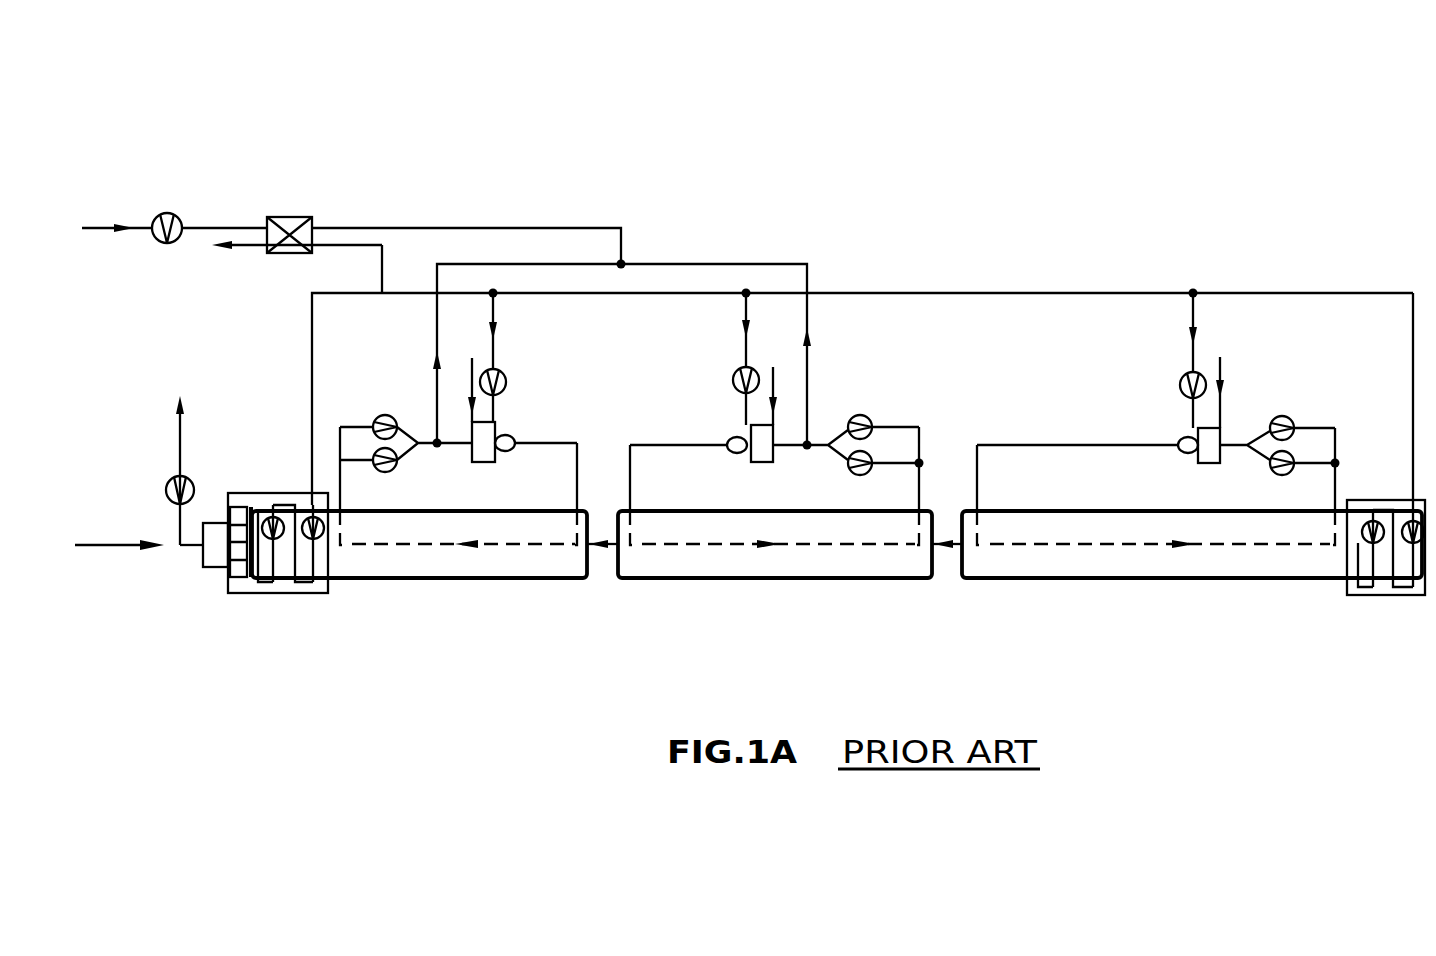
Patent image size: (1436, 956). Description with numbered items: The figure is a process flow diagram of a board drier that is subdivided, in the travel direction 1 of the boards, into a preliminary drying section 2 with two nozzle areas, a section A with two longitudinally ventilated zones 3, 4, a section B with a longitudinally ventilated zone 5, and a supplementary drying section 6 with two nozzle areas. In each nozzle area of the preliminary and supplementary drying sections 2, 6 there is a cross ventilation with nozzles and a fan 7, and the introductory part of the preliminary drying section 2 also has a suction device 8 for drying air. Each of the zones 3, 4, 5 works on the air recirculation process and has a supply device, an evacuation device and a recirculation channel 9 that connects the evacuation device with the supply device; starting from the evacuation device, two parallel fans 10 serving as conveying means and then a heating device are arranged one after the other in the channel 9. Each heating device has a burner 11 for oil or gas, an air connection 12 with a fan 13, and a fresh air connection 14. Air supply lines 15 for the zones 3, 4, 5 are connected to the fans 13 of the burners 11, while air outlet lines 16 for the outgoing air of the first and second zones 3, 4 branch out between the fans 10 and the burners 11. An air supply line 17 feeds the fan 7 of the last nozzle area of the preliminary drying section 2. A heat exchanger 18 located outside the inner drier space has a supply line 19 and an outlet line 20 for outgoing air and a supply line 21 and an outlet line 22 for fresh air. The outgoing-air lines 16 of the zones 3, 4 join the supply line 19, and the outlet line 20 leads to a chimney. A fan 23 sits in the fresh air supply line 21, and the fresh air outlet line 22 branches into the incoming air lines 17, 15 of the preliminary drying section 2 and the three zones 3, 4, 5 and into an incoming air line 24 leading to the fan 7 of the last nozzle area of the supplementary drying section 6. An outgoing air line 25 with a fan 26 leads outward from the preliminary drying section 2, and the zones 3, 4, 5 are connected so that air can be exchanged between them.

The travel direction 1 is at (110, 548).
The preliminary drying section 2 is at (265, 536).
The first zone 3 is at (457, 558).
The second zone 4 is at (795, 562).
The third zone 5 is at (1162, 562).
The supplementary drying section 6 is at (1387, 588).
The fan 7 is at (268, 513).
The suction device 8 is at (237, 517).
The recirculation channel 9 is at (578, 473).
The fans 10 is at (385, 415).
The burner 11 is at (482, 450).
The air connection 12 is at (500, 418).
The fan 13 is at (513, 382).
The fresh air connection 14 is at (470, 387).
The air supply lines 15 is at (493, 320).
The air outlet lines 16 is at (437, 332).
The air supply line 17 is at (311, 358).
The heat exchanger 18 is at (288, 226).
The supply line for outgoing air 19 is at (567, 226).
The outlet line for outgoing air 20 is at (248, 249).
The supply line for fresh air 21 is at (135, 222).
The outlet line for fresh air 22 is at (385, 265).
The fan 23 is at (168, 212).
The incoming air line 24 is at (1410, 332).
The outgoing air line 25 is at (173, 443).
The fan 26 is at (160, 493).